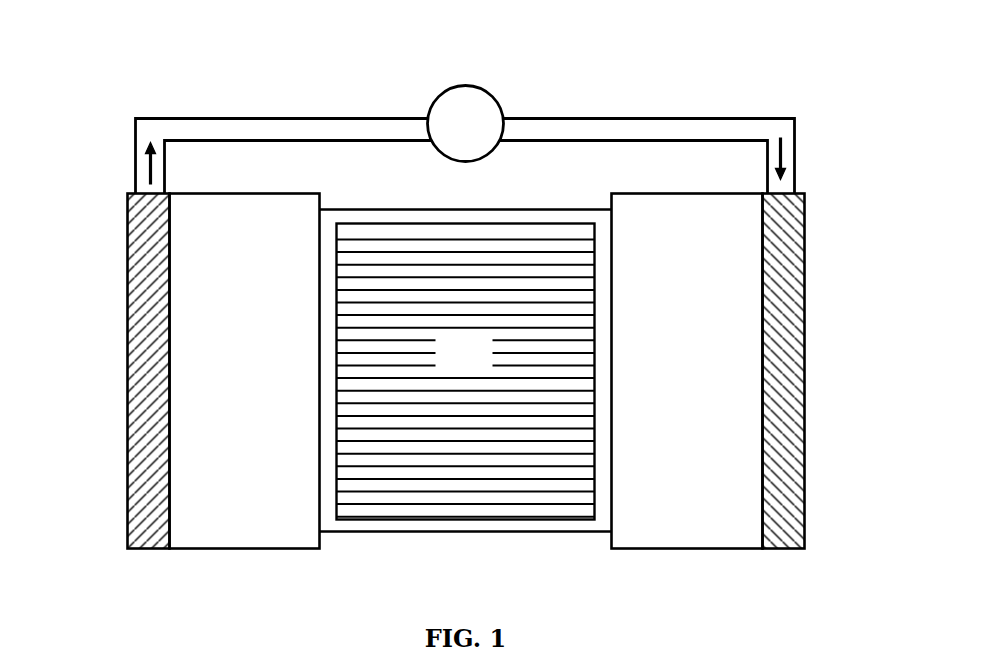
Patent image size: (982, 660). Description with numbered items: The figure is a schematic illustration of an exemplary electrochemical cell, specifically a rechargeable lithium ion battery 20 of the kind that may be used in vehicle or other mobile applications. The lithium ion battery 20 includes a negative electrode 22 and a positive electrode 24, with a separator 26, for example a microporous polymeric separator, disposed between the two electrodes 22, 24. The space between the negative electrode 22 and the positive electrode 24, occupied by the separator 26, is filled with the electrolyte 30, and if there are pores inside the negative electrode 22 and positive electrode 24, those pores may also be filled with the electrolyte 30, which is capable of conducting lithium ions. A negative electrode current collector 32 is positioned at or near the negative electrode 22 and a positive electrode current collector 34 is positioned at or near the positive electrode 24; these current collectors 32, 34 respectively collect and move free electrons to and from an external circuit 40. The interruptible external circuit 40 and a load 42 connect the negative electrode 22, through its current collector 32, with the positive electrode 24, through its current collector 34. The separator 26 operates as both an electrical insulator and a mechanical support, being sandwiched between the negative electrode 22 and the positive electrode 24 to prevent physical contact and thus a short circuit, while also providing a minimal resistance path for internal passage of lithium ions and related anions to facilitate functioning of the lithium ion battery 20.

The lithium ion battery 20 is at (132, 62).
The negative electrode 22 is at (228, 341).
The positive electrode 24 is at (674, 338).
The separator 26 is at (462, 531).
The electrolyte 30 is at (451, 367).
The negative electrode current collector 32 is at (123, 269).
The positive electrode current collector 34 is at (803, 265).
The external circuit 40 is at (280, 115).
The load 42 is at (452, 133).